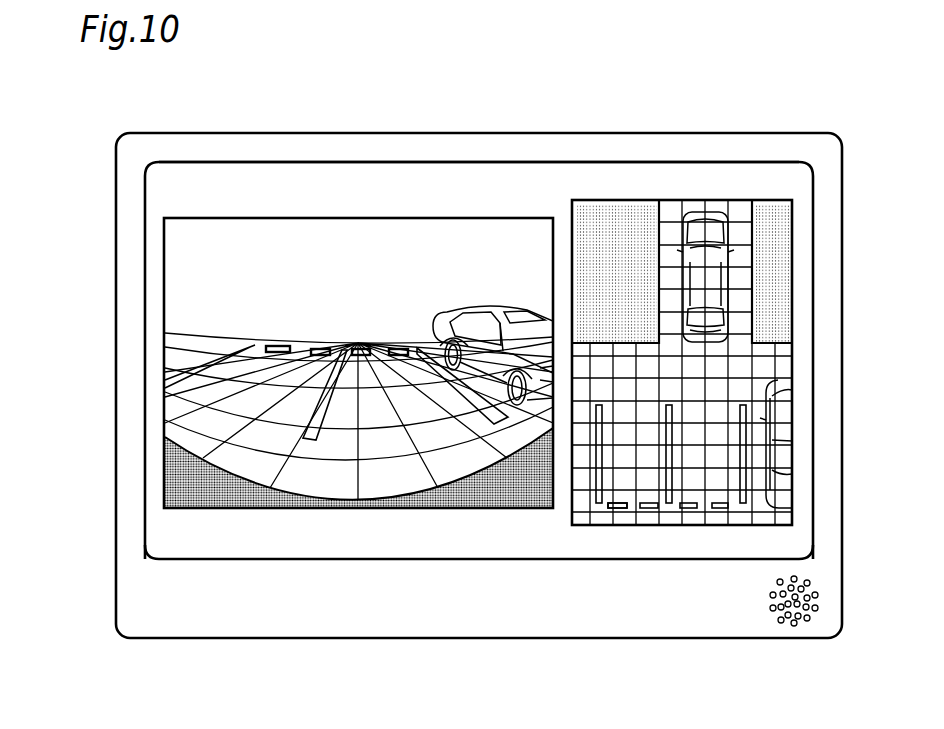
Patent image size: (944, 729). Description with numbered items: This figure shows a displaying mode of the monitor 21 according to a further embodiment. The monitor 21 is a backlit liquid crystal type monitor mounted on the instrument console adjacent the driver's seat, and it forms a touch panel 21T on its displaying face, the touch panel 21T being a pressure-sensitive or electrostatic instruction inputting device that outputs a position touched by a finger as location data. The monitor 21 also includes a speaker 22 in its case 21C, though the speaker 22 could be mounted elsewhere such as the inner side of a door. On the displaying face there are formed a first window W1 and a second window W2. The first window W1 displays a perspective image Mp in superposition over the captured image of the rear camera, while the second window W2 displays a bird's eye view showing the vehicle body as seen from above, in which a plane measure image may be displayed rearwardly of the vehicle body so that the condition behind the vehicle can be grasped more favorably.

The monitor 21 is at (112, 260).
The touch panel 21T is at (303, 190).
The case 21C is at (292, 625).
The speaker 22 is at (758, 592).
The first window W1 is at (358, 342).
The second window W2 is at (734, 362).
The perspective image Mp is at (348, 342).